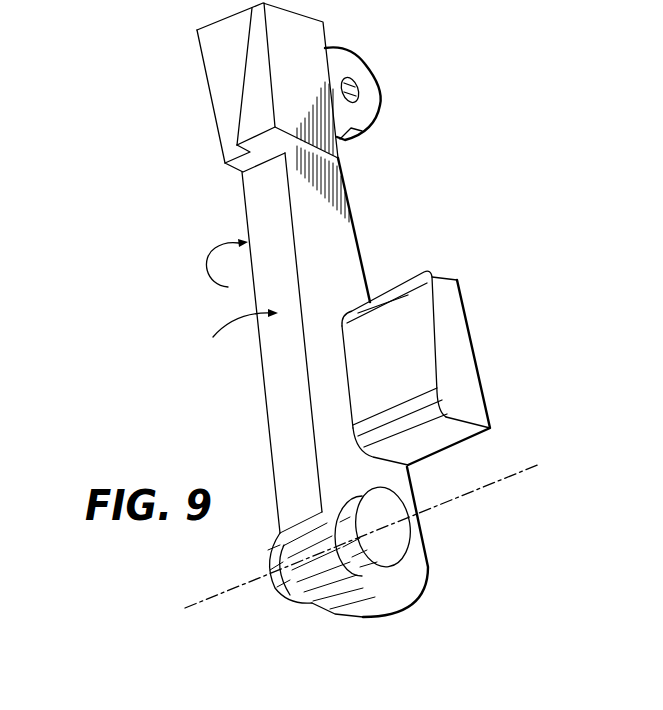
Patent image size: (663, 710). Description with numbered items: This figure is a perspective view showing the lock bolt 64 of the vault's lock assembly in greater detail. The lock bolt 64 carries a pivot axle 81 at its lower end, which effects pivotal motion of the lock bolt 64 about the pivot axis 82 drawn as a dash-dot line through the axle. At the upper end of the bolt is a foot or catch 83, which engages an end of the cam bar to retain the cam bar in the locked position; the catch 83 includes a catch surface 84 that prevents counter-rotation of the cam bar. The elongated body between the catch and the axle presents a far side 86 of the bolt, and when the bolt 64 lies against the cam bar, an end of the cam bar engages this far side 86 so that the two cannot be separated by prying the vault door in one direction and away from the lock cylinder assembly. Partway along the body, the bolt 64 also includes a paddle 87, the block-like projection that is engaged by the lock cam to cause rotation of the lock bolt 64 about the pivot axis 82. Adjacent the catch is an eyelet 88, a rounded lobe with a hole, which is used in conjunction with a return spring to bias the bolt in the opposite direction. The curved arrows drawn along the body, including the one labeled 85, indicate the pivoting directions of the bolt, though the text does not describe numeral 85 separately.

The lock bolt 64 is at (498, 81).
The pivot axle 81 is at (387, 541).
The pivot axis 82 is at (492, 463).
The foot or catch 83 is at (310, 91).
The catch surface 84 is at (265, 152).
The direction arrow 85 is at (234, 337).
The far side 86 is at (228, 287).
The paddle 87 is at (461, 361).
The eyelet 88 is at (362, 110).